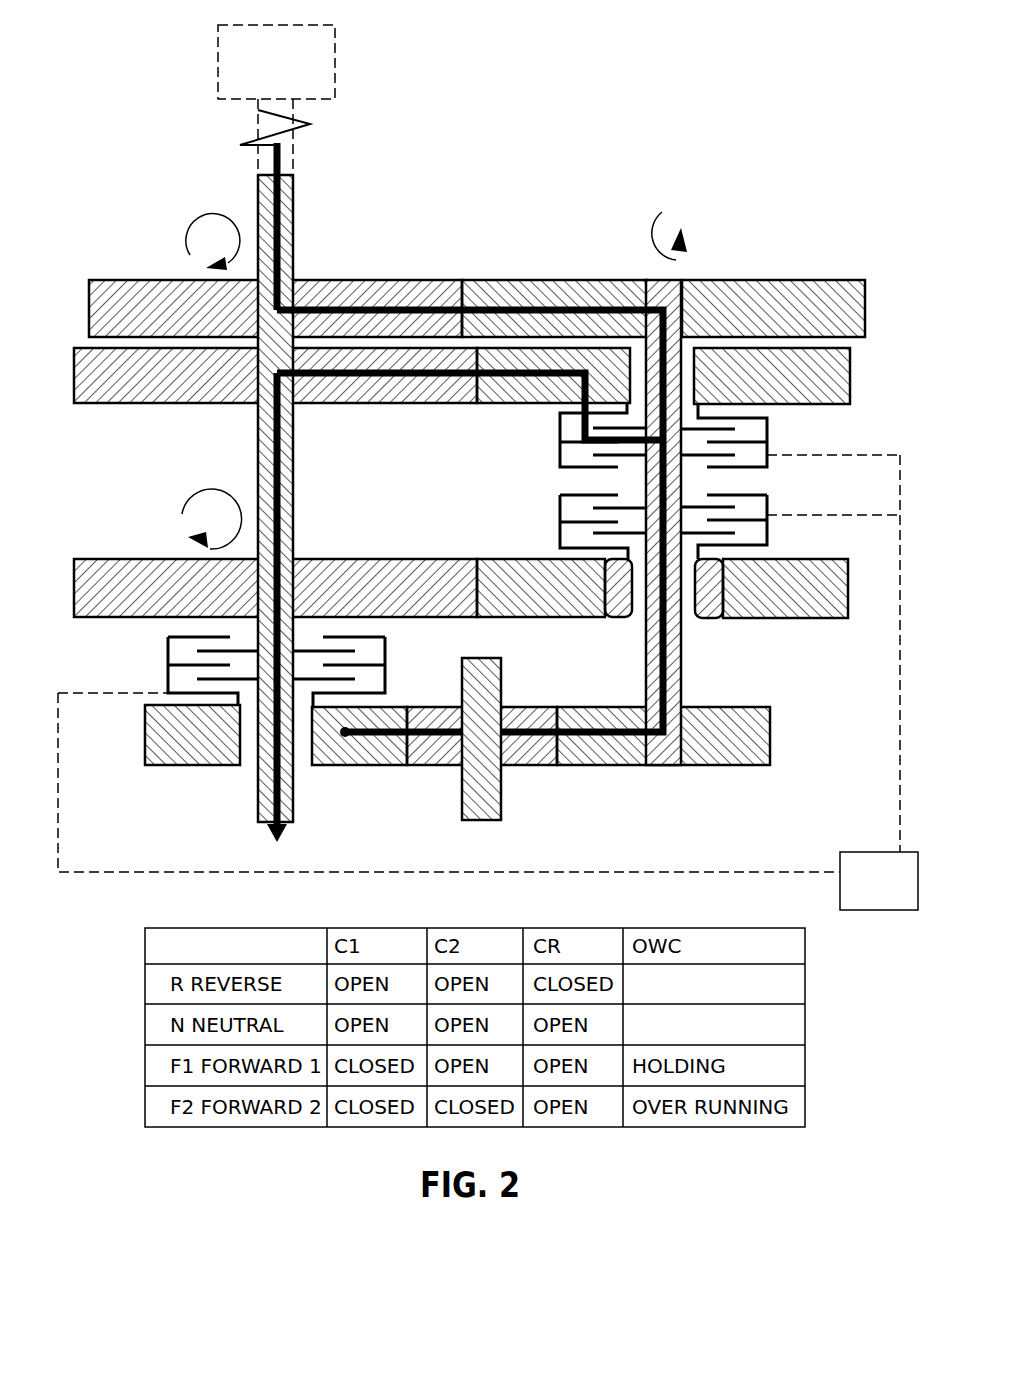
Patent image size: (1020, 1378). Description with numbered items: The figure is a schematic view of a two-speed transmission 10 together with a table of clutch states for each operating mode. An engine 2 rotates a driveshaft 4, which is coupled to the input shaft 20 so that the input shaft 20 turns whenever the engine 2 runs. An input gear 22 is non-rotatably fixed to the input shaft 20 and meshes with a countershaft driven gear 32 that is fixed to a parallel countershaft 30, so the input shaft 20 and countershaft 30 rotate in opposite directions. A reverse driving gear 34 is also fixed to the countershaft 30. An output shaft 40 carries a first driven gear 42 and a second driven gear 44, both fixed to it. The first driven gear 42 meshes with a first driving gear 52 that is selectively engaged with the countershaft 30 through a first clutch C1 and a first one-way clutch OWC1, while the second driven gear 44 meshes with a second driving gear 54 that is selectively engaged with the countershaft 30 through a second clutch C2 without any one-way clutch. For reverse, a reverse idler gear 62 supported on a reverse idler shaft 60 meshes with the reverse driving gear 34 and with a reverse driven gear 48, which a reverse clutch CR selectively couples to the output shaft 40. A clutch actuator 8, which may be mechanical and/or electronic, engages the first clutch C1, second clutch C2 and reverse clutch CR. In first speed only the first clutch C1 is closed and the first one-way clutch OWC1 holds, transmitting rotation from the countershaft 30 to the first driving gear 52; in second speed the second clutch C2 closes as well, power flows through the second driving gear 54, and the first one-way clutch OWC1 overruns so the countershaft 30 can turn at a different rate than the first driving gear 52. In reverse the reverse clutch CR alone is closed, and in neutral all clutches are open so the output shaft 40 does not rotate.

The engine 2 is at (284, 73).
The driveshaft 4 is at (288, 140).
The clutch actuator 8 is at (887, 897).
The transmission 10 is at (770, 100).
The input shaft 20 is at (285, 210).
The input gear 22 is at (372, 280).
The countershaft 30 is at (670, 292).
The countershaft driven gear 32 is at (786, 294).
The reverse driving gear 34 is at (740, 766).
The output shaft 40 is at (262, 812).
The first driven gear 42 is at (76, 590).
The second driven gear 44 is at (76, 378).
The reverse driven gear 48 is at (150, 752).
The first driving gear 52 is at (836, 576).
The second driving gear 54 is at (846, 376).
The reverse idler shaft 60 is at (487, 806).
The reverse idler gear 62 is at (535, 762).
The first clutch C1 is at (768, 502).
The second clutch C2 is at (768, 432).
The reverse clutch CR is at (168, 665).
The first one-way clutch OWC1 is at (702, 620).